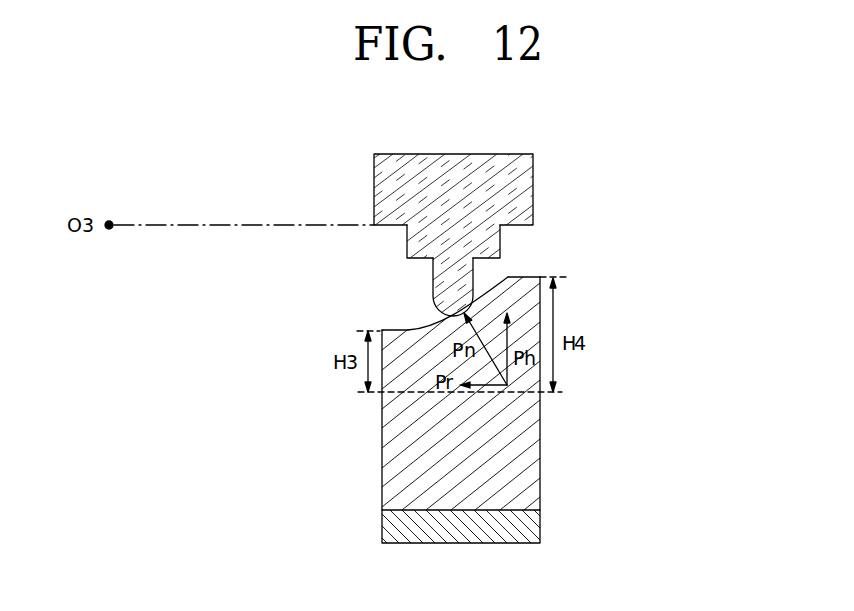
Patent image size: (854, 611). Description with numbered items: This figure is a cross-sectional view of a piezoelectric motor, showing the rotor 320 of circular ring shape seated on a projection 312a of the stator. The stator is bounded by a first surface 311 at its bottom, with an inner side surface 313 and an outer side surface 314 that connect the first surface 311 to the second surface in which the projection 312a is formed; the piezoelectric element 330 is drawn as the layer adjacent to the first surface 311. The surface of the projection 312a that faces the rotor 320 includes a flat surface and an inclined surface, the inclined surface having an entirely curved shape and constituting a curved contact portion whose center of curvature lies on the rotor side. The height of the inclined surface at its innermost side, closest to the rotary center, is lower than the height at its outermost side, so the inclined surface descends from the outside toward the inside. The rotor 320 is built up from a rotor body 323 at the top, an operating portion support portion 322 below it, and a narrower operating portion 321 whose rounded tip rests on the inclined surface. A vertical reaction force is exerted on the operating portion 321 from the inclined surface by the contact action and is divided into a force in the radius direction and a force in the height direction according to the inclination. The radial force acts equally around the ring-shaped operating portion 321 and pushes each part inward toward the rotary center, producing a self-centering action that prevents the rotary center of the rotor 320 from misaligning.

The rotor 320 is at (533, 235).
The rotor body 323 is at (518, 182).
The operating portion support portion 322 is at (488, 242).
The operating portion 321 is at (457, 290).
The projection 312a is at (535, 322).
The inner side surface 313 is at (382, 437).
The outer side surface 314 is at (540, 445).
The first surface 311 is at (480, 512).
The piezoelectric element 330 is at (392, 528).